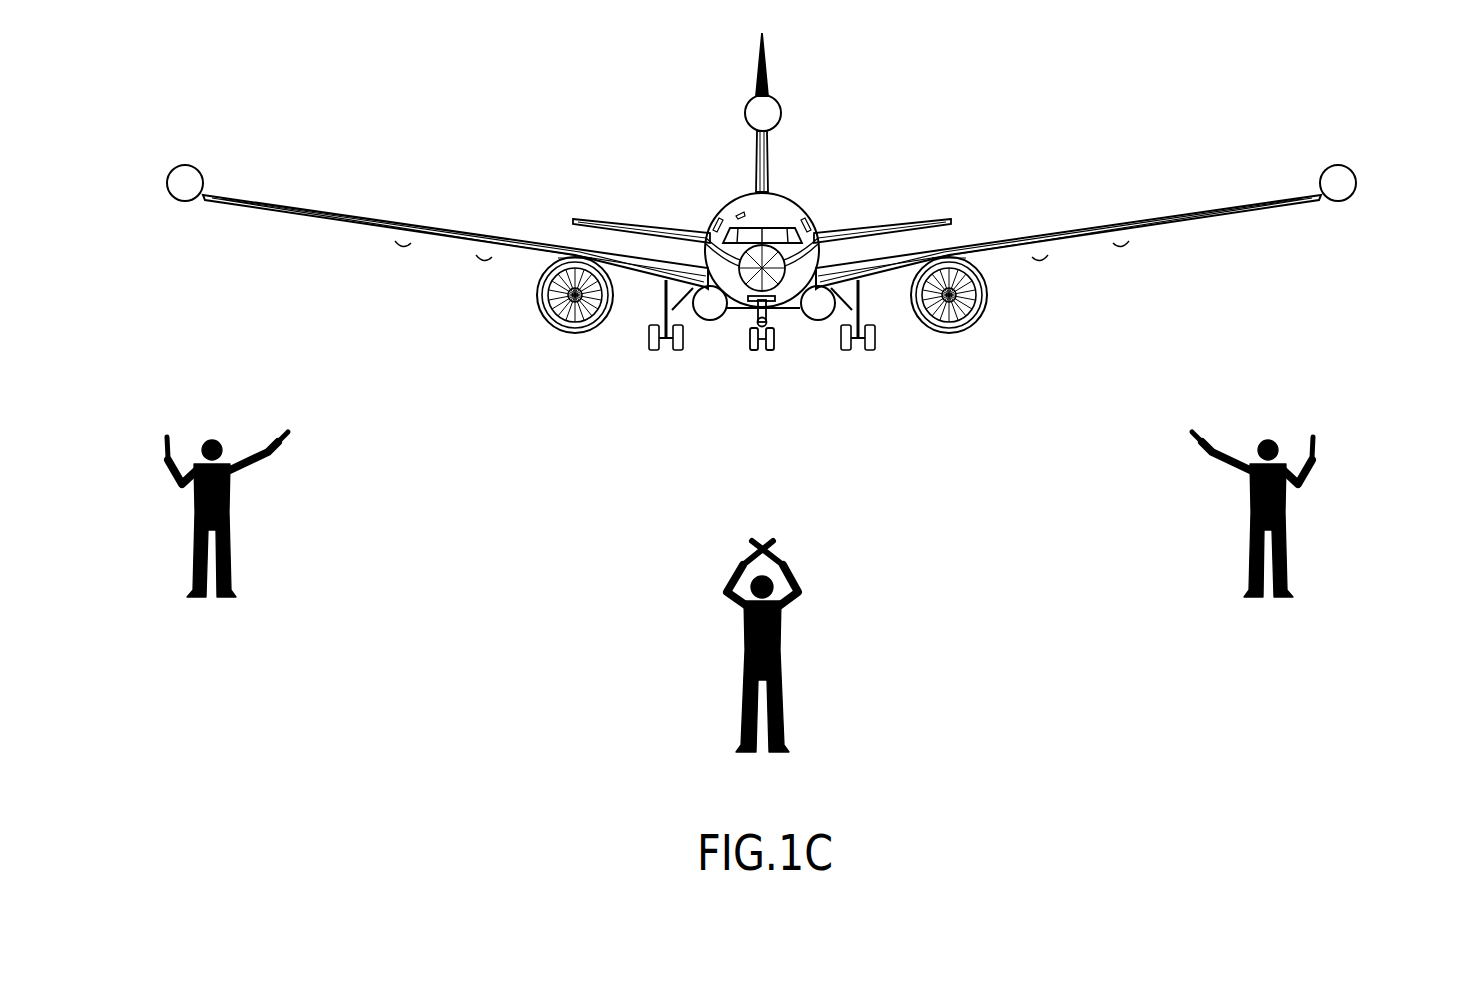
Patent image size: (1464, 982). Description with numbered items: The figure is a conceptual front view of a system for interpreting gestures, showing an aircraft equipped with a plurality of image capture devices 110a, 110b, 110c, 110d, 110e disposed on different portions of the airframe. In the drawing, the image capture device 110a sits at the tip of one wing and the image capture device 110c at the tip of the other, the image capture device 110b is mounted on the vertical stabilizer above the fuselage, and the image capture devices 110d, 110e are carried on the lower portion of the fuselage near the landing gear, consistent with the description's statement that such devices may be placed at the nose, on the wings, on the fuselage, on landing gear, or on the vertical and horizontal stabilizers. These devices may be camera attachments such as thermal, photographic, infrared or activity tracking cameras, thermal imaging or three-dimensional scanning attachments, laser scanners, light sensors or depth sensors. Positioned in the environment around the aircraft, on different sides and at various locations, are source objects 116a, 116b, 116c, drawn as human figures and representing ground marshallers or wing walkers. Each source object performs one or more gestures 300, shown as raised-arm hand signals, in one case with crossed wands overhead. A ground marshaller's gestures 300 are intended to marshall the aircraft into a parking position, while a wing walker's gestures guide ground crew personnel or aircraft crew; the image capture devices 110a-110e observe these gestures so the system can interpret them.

The image capture device 110a is at (166, 157).
The image capture device 110b is at (746, 92).
The image capture device 110c is at (1348, 157).
The image capture device 110d is at (706, 330).
The image capture device 110e is at (818, 330).
The gesture 300 is at (703, 595).
The source object 116a is at (191, 621).
The source object 116b is at (732, 769).
The source object 116c is at (1237, 611).